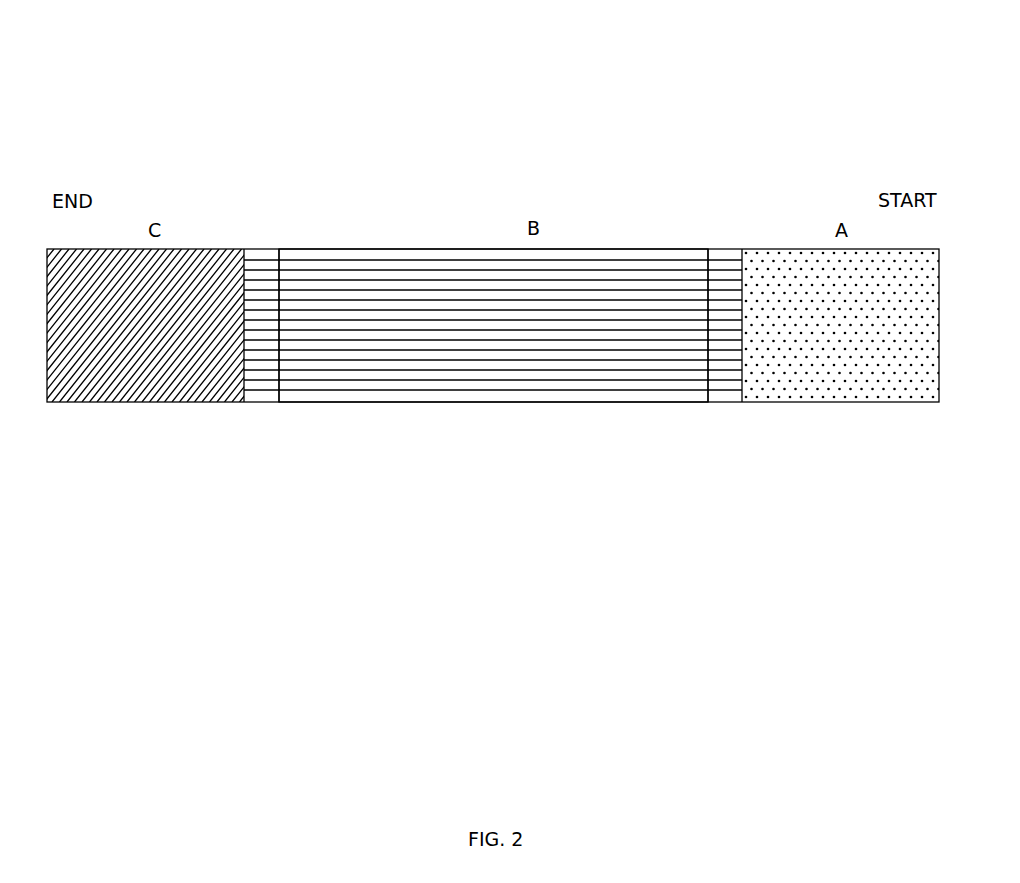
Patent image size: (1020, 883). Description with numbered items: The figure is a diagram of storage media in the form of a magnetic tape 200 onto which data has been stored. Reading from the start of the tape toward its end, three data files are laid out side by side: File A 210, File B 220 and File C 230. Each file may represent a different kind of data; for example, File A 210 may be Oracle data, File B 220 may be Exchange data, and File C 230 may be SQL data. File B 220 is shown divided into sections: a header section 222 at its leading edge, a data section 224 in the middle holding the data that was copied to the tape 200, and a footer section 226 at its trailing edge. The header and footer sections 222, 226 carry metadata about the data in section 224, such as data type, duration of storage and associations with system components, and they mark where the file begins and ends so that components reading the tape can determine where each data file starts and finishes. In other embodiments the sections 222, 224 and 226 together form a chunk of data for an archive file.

The magnetic tape 200 is at (380, 100).
The File A 210 is at (851, 200).
The File B 220 is at (531, 212).
The header section 222 is at (723, 402).
The data section 224 is at (443, 402).
The footer section 226 is at (263, 402).
The File C 230 is at (157, 210).